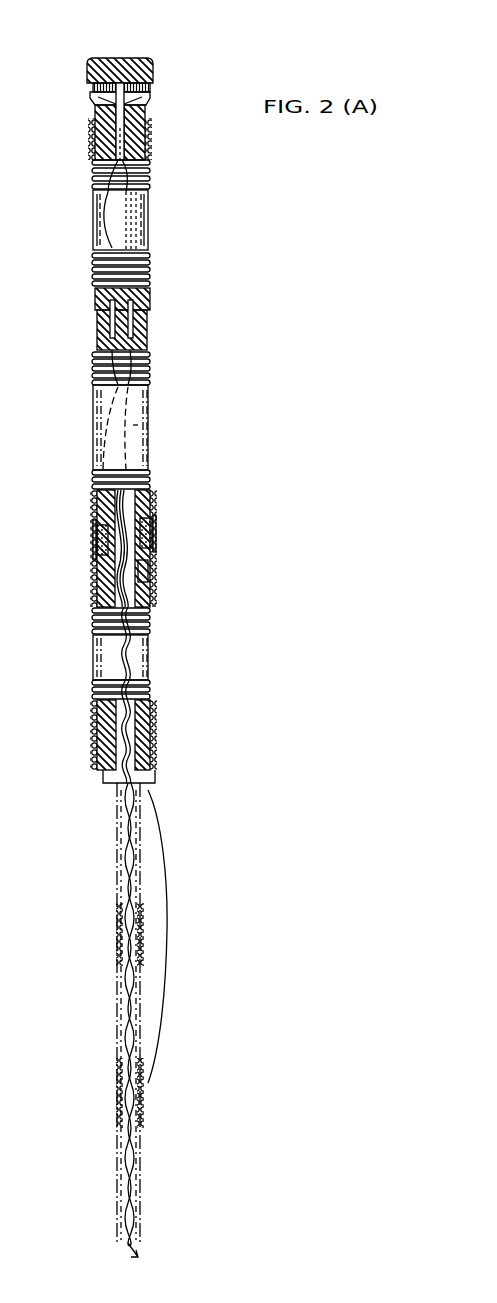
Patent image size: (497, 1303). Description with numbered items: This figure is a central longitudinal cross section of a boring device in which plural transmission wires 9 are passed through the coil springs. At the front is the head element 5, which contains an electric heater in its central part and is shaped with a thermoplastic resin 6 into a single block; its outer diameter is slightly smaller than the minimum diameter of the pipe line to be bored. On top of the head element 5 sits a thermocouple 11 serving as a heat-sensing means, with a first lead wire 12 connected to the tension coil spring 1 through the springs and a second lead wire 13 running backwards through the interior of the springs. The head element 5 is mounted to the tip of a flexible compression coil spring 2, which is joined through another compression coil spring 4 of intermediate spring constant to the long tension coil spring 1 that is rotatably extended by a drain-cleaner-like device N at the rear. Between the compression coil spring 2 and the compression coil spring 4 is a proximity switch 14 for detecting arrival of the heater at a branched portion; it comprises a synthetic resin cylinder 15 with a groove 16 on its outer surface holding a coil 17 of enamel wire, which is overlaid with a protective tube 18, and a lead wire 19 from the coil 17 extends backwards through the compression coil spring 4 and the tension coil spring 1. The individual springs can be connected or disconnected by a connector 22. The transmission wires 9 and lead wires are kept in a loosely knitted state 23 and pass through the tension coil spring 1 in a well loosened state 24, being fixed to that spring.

The tension coil spring 1 is at (148, 915).
The compression coil spring 2 is at (143, 183).
The compression coil spring 4 is at (98, 695).
The head element 5 is at (78, 41).
The thermoplastic resin 6 is at (150, 68).
The transmission wires 9 is at (132, 222).
The thermocouple 11 is at (122, 57).
The first lead wire 12 is at (140, 115).
The second lead wire 13 is at (105, 210).
The proximity switch 14 is at (173, 547).
The cylinder 15 is at (150, 512).
The groove 16 is at (156, 536).
The coil 17 is at (95, 540).
The protective tube 18 is at (95, 550).
The lead wire 19 is at (140, 572).
The connector 22 is at (97, 318).
The loosely knitted state 23 is at (118, 727).
The well loosened state 24 is at (120, 490).